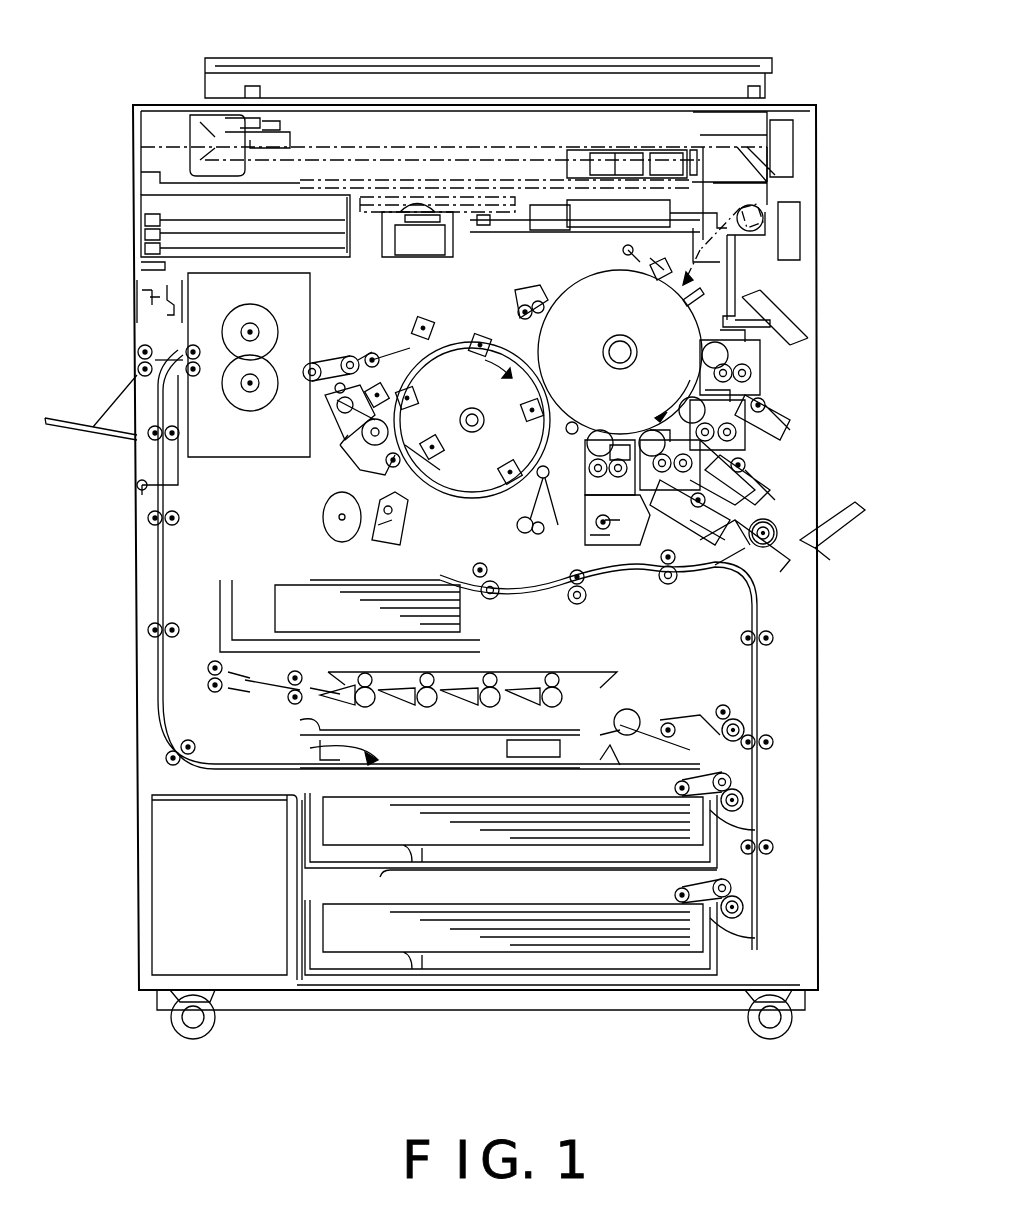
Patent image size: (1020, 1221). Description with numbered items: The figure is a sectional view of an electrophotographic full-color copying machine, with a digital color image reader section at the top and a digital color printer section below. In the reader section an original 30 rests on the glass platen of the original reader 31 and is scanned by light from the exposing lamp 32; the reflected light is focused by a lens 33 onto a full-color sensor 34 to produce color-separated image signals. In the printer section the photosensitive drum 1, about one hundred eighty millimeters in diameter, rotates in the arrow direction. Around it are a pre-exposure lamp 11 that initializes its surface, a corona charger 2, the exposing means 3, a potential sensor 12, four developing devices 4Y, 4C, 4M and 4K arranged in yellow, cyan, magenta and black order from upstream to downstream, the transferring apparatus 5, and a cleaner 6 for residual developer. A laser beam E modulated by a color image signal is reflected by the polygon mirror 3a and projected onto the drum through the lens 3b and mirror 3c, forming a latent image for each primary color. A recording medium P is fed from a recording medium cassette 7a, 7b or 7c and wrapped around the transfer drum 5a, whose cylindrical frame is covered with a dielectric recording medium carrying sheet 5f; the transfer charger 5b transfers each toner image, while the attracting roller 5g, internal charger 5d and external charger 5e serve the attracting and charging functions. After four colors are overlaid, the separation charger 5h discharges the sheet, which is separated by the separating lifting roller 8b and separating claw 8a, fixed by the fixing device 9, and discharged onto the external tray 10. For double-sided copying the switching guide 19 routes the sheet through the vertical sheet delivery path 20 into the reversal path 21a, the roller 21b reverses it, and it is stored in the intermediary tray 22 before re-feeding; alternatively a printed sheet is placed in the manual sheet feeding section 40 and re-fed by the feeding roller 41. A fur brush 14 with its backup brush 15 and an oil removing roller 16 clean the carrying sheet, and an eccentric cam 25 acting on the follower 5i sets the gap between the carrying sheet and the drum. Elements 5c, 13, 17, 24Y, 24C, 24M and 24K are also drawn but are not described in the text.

The photosensitive drum 1 is at (735, 325).
The charger 2 is at (640, 180).
The exposing means 3 is at (448, 205).
The polygon mirror 3a is at (405, 215).
The lens 3b is at (478, 210).
The mirror 3c is at (765, 210).
The developing device 4Y is at (720, 360).
The developing device 4C is at (745, 430).
The developing device 4K is at (605, 432).
The developing device 4M is at (760, 520).
The transferring apparatus 5 is at (482, 392).
The transfer drum 5a is at (440, 490).
The transfer charger 5b is at (522, 418).
The transfer drum member 5c is at (505, 485).
The internal charger 5d is at (377, 385).
The external charger 5e is at (345, 400).
The recording medium carrying sheet 5f is at (478, 335).
The recording medium attracting roller 5g is at (545, 510).
The separation charger 5h is at (418, 322).
The follower 5i is at (375, 540).
The cleaner 6 is at (565, 290).
The recording medium cassette 7a is at (275, 605).
The recording medium cassette 7b is at (740, 830).
The recording medium cassette 7c is at (740, 942).
The separating claw 8a is at (380, 355).
The separating lifting roller 8b is at (522, 300).
The fixing device 9 is at (142, 262).
The external tray 10 is at (72, 420).
The pre-exposure lamp 11 is at (690, 150).
The potential sensor 12 is at (722, 318).
The transfer charger 13 is at (575, 422).
The fur brush 14 is at (350, 430).
The backup brush 15 is at (424, 402).
The oil removing roller 16 is at (390, 468).
The cam 17 is at (415, 445).
The sheet delivery path switching guide 19 is at (145, 345).
The vertical sheet delivery path 20 is at (155, 605).
The reversal path 21a is at (310, 745).
The roller 21b is at (165, 765).
The intermediary tray 22 is at (600, 735).
The yellow toner hopper 24Y is at (765, 405).
The cyan toner hopper 24C is at (760, 470).
The black toner hopper 24K is at (625, 540).
The magenta toner hopper 24M is at (700, 545).
The eccentric cam 25 is at (323, 515).
The original 30 is at (335, 105).
The original reader 31 is at (275, 100).
The exposing lamp 32 is at (205, 112).
The lens 33 is at (600, 150).
The full-color sensor 34 is at (700, 112).
The manual sheet feeding section 40 is at (862, 506).
The feeding roller 41 is at (765, 548).
The laser beam E is at (652, 258).
The recording medium P is at (325, 600).